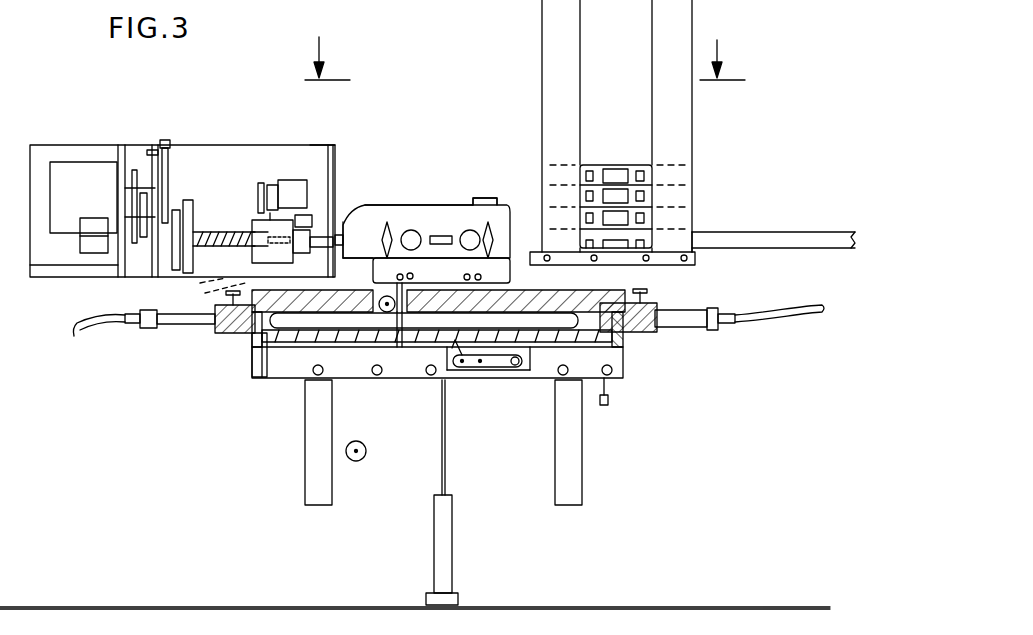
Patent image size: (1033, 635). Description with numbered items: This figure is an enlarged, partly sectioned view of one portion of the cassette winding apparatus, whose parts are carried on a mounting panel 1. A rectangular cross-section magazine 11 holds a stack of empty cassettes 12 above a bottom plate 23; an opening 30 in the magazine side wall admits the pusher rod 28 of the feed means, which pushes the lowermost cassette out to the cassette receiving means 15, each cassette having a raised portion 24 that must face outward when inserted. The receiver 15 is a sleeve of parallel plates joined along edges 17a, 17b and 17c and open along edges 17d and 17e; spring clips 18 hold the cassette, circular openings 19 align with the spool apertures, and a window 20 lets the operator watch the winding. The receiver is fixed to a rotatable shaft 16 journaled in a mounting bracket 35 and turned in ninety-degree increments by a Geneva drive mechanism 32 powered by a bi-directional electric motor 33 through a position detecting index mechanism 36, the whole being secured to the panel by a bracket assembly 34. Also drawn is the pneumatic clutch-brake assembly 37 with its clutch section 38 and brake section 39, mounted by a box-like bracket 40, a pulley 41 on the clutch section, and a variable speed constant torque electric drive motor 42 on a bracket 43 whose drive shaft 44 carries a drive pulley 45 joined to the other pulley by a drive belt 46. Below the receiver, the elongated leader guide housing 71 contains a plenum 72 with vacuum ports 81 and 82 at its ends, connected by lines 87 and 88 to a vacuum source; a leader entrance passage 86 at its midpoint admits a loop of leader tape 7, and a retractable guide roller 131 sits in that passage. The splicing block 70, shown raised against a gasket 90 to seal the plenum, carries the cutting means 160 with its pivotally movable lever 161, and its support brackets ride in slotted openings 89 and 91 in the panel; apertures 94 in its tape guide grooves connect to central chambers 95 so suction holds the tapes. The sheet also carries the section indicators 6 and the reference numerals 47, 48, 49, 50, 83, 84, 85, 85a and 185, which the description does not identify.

The mounting panel 1 is at (212, 490).
The section line 6 is at (525, 47).
The leader tape 7 is at (403, 347).
The magazine 11 is at (693, 140).
The cassettes 12 is at (600, 162).
The cassette receiving means 15 is at (500, 250).
The rotatable shaft 16 is at (345, 222).
The edge 17a is at (372, 200).
The edge 17b is at (385, 205).
The edge 17c is at (486, 198).
The edge 17d is at (398, 260).
The edge 17e is at (492, 222).
The spring clips 18 is at (382, 252).
The circular openings 19 is at (470, 230).
The window 20 is at (441, 236).
The bottom plate 23 is at (697, 260).
The raised portion 24 is at (458, 277).
The pusher rod 28 is at (775, 232).
The opening 30 is at (694, 232).
The Geneva drive mechanism 32 is at (170, 195).
The bi-directional electric motor 33 is at (60, 160).
The bracket assembly 34 is at (112, 284).
The mounting bracket 35 is at (340, 130).
The position detecting index mechanism 36 is at (252, 210).
The pneumatic clutch-brake assembly 37 is at (335, 145).
The clutch section 38 is at (180, 280).
The brake section 39 is at (208, 296).
The box-like bracket 40 is at (270, 246).
The pulley 41 is at (300, 178).
The electric drive motor 42 is at (261, 180).
The bracket 43 is at (274, 183).
The drive shaft 44 is at (333, 230).
The drive pulley 45 is at (303, 253).
The drive belt 46 is at (193, 232).
The spring 47 is at (245, 231).
The rod 48 is at (153, 148).
The fitting 49 is at (168, 140).
The tube 50 is at (170, 150).
The splicing block 70 is at (300, 347).
The leader guide housing 71 is at (343, 262).
The plenum 72 is at (266, 350).
The vacuum port 81 is at (655, 312).
The vacuum port 82 is at (222, 335).
The cylinder 83 is at (688, 330).
The cylinder 84 is at (158, 330).
The screw 85 is at (648, 290).
The screw 85a is at (220, 325).
The leader entrance passage 86 is at (400, 345).
The line 87 is at (790, 316).
The line 88 is at (74, 338).
The slotted opening 89 is at (580, 484).
The gasket 90 is at (624, 345).
The slotted opening 91 is at (325, 486).
The apertures 94 is at (360, 378).
The central chamber 95 is at (337, 378).
The guide roller 131 is at (388, 312).
The cutting means 160 is at (512, 370).
The lever 161 is at (490, 367).
The knob 185 is at (367, 455).